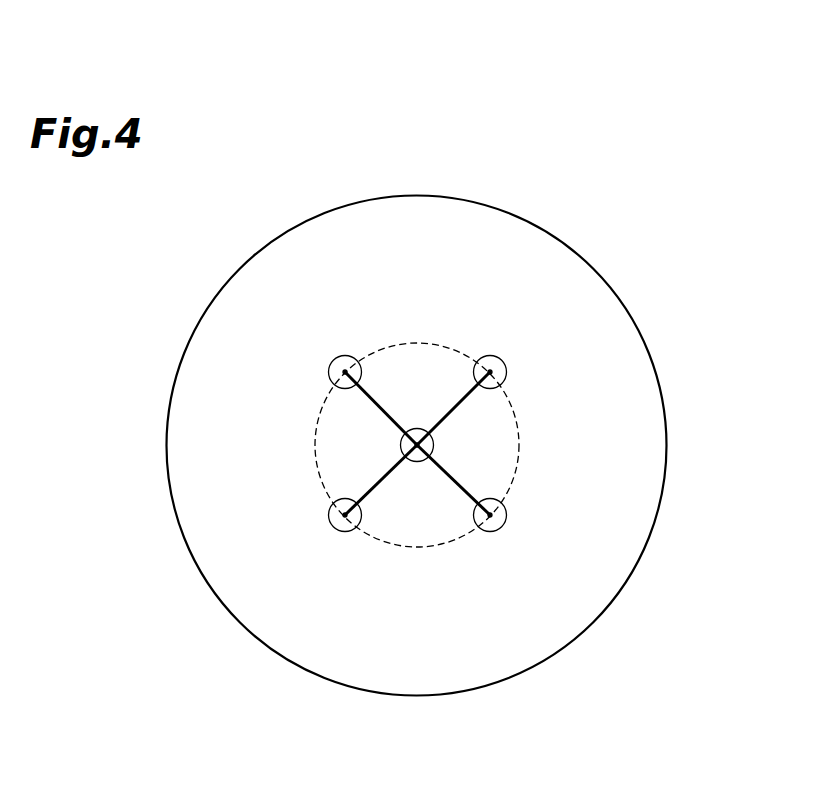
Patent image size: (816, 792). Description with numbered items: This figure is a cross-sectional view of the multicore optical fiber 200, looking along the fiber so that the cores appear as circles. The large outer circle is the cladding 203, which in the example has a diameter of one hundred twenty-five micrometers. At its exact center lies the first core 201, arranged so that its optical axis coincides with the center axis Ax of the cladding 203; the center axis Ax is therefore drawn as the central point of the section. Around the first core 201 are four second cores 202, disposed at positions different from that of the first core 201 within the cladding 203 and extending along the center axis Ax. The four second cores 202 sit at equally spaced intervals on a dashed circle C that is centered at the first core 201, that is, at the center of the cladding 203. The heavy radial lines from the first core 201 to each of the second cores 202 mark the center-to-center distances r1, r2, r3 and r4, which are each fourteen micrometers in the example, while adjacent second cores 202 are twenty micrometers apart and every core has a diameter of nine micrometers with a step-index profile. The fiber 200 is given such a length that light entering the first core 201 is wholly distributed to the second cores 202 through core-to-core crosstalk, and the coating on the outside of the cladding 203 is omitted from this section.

The multicore optical fiber 200 is at (603, 168).
The first core 201 is at (417, 445).
The second cores 202 is at (345, 372).
The cladding 203 is at (565, 320).
The circle C is at (405, 344).
The center axis Ax is at (417, 447).
The distance between first and second cores r1 is at (381, 408).
The distance between first and second cores r2 is at (455, 408).
The distance between first and second cores r3 is at (381, 480).
The distance between first and second cores r4 is at (453, 482).